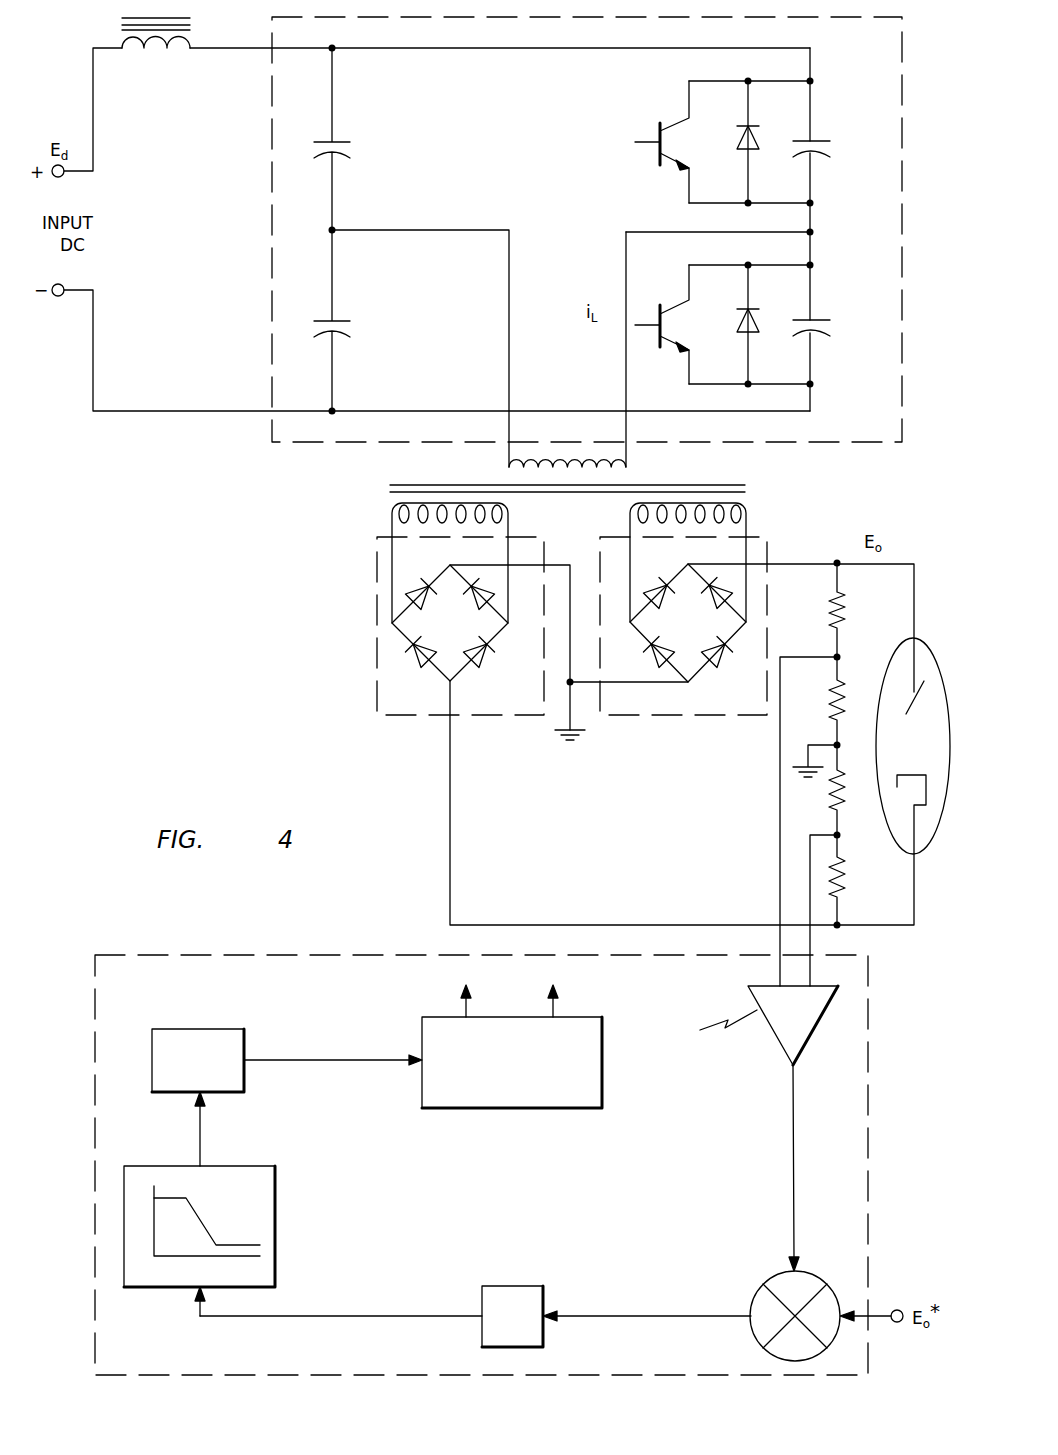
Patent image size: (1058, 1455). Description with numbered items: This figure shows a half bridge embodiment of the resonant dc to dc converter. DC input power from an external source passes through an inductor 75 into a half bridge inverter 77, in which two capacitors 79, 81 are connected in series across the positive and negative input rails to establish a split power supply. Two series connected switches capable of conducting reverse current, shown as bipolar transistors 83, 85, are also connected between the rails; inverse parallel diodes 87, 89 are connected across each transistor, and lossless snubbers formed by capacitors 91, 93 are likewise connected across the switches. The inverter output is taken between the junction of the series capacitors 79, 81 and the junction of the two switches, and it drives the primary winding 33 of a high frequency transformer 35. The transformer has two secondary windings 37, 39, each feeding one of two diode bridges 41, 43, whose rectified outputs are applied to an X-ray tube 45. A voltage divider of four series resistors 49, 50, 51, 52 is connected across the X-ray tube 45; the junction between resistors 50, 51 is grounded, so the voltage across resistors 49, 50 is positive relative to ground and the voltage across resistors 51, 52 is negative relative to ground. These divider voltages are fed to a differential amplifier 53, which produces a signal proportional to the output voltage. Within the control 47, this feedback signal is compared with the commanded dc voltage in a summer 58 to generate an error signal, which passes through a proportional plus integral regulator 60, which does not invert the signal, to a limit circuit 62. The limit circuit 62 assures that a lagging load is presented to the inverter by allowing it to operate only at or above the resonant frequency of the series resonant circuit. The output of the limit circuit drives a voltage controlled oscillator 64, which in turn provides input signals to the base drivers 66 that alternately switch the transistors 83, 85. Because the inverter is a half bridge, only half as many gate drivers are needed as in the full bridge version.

The primary winding 33 is at (627, 467).
The high frequency transformer 35 is at (752, 488).
The secondary winding 37 is at (392, 518).
The secondary winding 39 is at (747, 522).
The diode bridge 41 is at (377, 640).
The diode bridge 43 is at (727, 716).
The X-ray tube 45 is at (928, 648).
The control 47 is at (869, 1025).
The resistor 49 is at (840, 626).
The resistor 50 is at (835, 718).
The resistor 51 is at (840, 790).
The resistor 52 is at (840, 890).
The differential amplifier 53 is at (818, 1040).
The summer 58 is at (760, 1290).
The proportional plus integral regulator 60 is at (512, 1285).
The limit circuit 62 is at (276, 1210).
The voltage controlled oscillator 64 is at (245, 1040).
The base driver 66 is at (590, 1015).
The inductor 75 is at (157, 54).
The half bridge inverter 77 is at (903, 105).
The capacitor 79 is at (356, 143).
The capacitor 81 is at (356, 327).
The bipolar transistor 83 is at (658, 136).
The bipolar transistor 85 is at (676, 300).
The inverse parallel diode 87 is at (737, 145).
The inverse parallel diode 89 is at (737, 325).
The capacitor 91 is at (815, 138).
The capacitor 93 is at (815, 320).